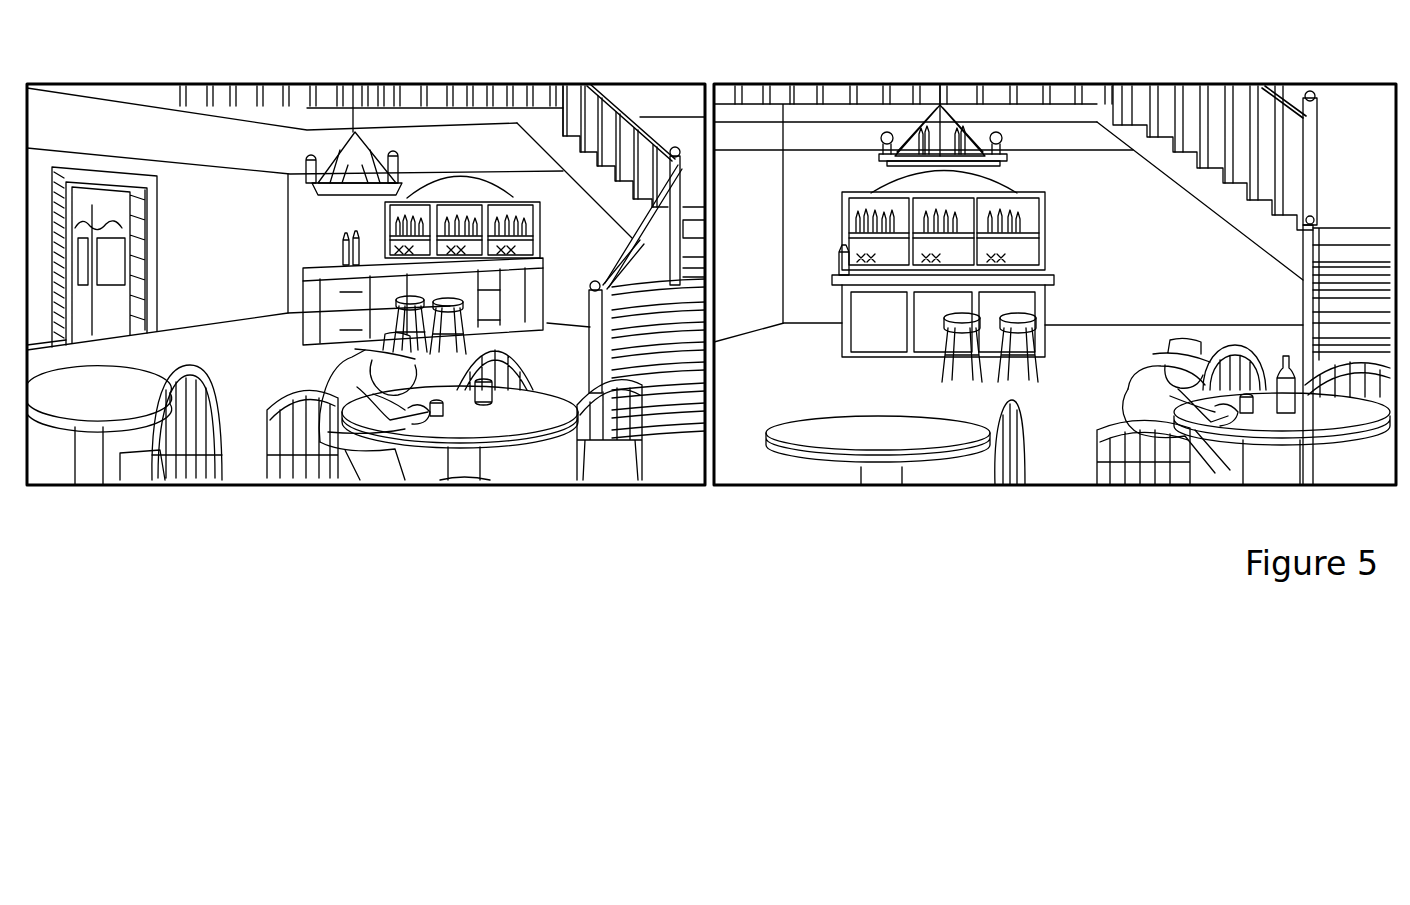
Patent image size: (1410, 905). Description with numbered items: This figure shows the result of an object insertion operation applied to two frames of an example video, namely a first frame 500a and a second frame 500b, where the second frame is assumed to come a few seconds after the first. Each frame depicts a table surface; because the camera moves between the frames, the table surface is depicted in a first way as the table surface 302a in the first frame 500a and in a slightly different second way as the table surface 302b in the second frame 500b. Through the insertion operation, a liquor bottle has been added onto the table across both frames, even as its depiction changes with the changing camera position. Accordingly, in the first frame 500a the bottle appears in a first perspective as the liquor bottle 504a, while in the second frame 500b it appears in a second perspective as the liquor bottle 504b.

The first frame 500a is at (611, 83).
The second frame 500b is at (1308, 83).
The table surface 302a is at (538, 402).
The table surface 302b is at (1268, 395).
The liquor bottle 504a is at (483, 402).
The liquor bottle 504b is at (1283, 407).